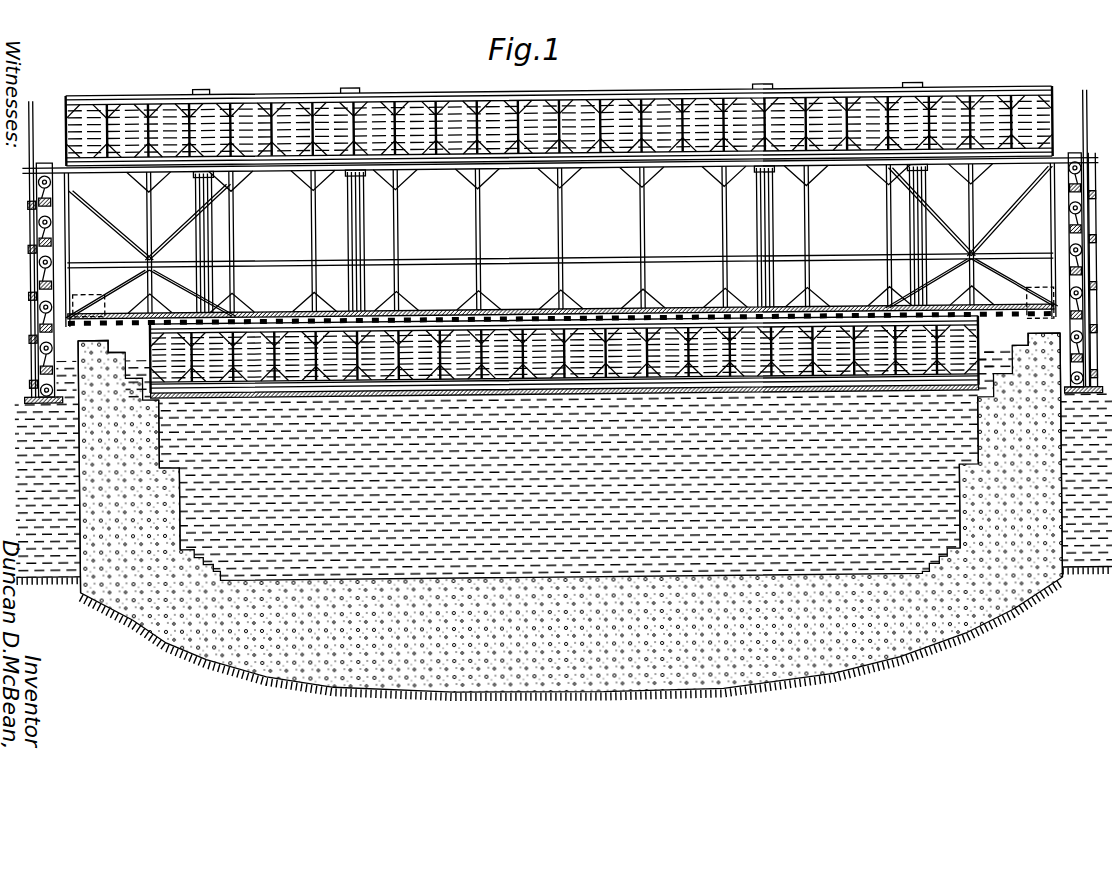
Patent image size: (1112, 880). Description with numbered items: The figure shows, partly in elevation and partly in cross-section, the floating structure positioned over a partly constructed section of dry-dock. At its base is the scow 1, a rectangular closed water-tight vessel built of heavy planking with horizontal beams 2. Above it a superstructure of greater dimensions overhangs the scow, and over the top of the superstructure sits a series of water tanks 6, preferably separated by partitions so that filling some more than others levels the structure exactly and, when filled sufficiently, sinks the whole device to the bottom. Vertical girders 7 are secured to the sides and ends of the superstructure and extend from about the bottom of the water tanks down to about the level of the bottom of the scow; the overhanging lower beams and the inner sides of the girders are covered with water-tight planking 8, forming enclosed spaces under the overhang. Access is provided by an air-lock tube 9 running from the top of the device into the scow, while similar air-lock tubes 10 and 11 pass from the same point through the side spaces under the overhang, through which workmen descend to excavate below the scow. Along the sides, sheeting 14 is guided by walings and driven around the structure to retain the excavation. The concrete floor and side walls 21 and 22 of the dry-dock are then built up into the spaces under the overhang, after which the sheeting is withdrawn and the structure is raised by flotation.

The scow 1 is at (672, 358).
The horizontal beams 2 is at (441, 316).
The water tanks 6 is at (668, 104).
The vertical girders 7 is at (48, 172).
The planking 8 is at (74, 360).
The air-lock tube 9 is at (352, 251).
The air-lock tube 10 is at (212, 252).
The air-lock tube 11 is at (923, 254).
The sheeting 14 is at (36, 115).
The side wall 21 is at (607, 678).
The side wall 22 is at (80, 444).